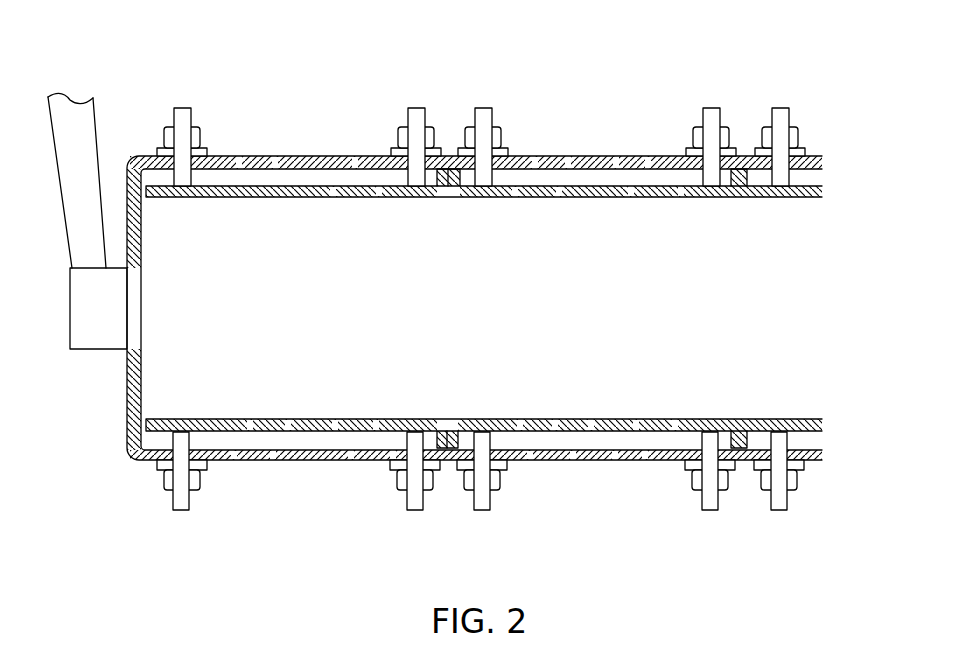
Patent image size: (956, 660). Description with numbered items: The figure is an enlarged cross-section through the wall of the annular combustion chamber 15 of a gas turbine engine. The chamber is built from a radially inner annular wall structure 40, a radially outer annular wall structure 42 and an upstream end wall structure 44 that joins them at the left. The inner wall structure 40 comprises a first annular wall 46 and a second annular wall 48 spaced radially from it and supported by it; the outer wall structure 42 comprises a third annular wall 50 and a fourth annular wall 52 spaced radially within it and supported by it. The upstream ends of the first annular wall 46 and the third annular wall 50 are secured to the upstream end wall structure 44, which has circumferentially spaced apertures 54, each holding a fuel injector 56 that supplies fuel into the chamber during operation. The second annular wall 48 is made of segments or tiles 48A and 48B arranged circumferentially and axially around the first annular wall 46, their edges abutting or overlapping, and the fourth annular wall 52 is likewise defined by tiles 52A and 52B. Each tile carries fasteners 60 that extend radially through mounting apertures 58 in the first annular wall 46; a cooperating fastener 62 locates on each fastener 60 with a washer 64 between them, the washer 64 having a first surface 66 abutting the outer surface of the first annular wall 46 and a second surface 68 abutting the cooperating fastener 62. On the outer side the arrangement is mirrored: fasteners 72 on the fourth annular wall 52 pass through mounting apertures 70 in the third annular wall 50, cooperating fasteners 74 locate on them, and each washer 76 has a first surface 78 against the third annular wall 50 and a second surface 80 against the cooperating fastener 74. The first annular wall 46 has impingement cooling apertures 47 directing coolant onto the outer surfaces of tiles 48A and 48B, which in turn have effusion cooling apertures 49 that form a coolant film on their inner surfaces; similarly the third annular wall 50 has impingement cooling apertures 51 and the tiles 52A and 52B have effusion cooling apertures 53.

The combustion chamber 15 is at (667, 67).
The radially inner annular wall structure 40 is at (497, 443).
The radially outer annular wall structure 42 is at (507, 161).
The upstream end wall structure 44 is at (127, 403).
The first annular wall 46 is at (476, 489).
The impingement cooling apertures 47 is at (233, 461).
The second annular wall 48 is at (484, 432).
The segment or tile 48A is at (293, 402).
The segment or tile 48B is at (538, 419).
The effusion cooling apertures 49 is at (252, 419).
The third annular wall 50 is at (476, 133).
The impingement cooling apertures 51 is at (273, 156).
The fourth annular wall 52 is at (484, 222).
The segment or tile 52A is at (310, 198).
The segment or tile 52B is at (575, 200).
The effusion cooling apertures 53 is at (332, 198).
The aperture 54 is at (141, 282).
The fuel injector 56 is at (82, 308).
The mounting aperture 58 is at (193, 447).
The fastener 60 is at (180, 512).
The cooperating fastener 62 is at (165, 483).
The washer 64 is at (157, 465).
The first surface 66 is at (690, 452).
The second surface 68 is at (728, 473).
The mounting aperture 70 is at (193, 170).
The fastener 72 is at (187, 108).
The cooperating fastener 74 is at (200, 135).
The washer 76 is at (160, 150).
The first surface 78 is at (743, 197).
The second surface 80 is at (730, 158).